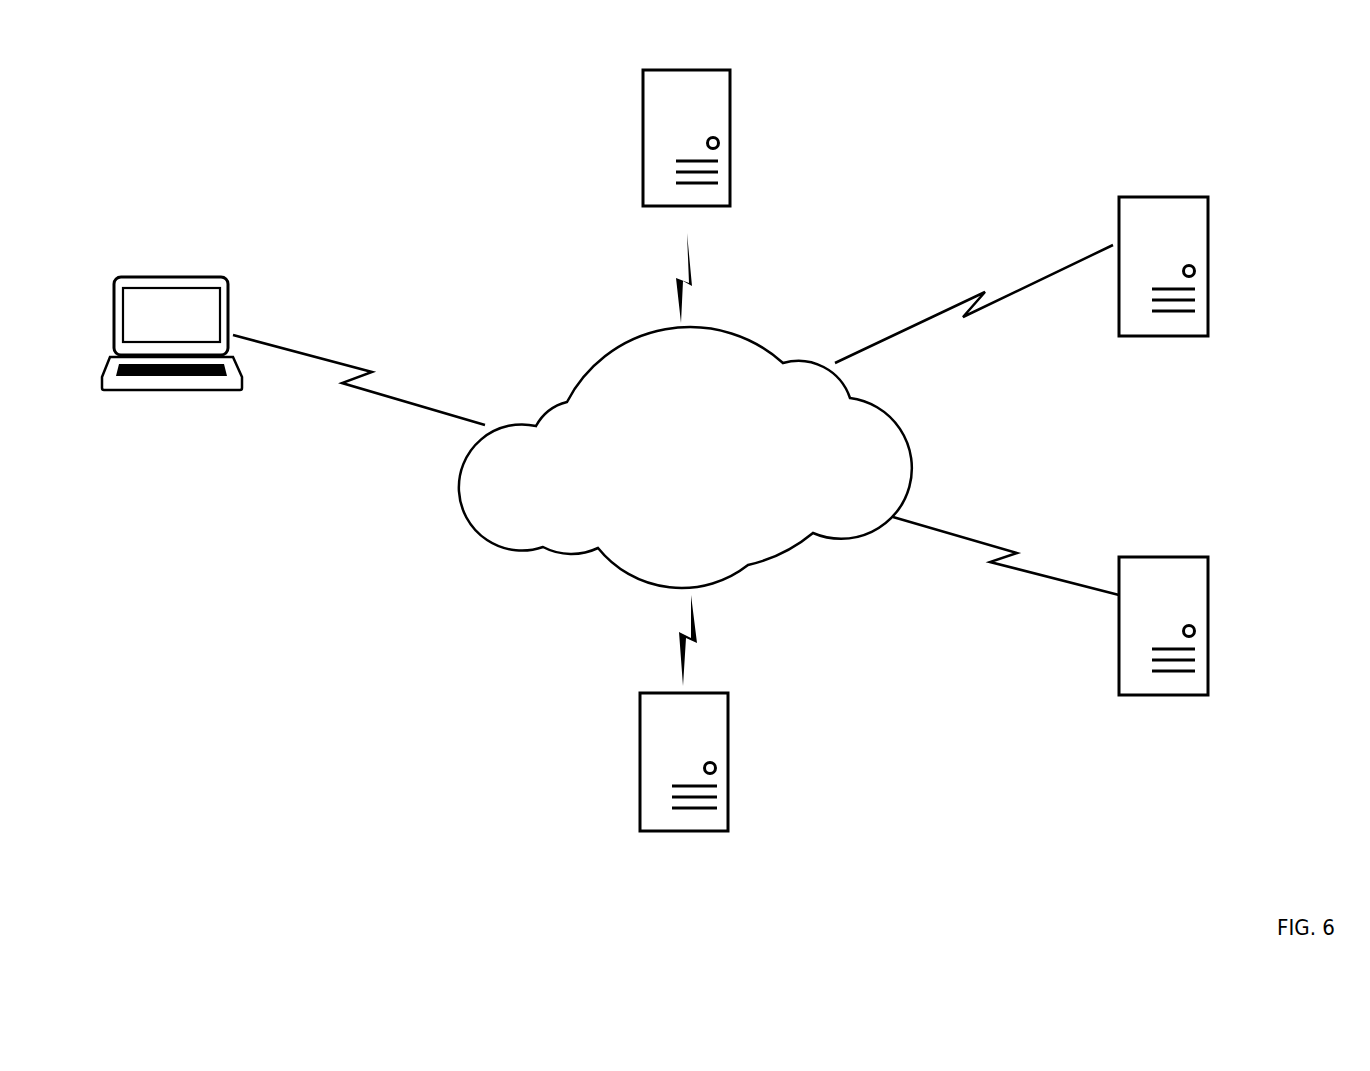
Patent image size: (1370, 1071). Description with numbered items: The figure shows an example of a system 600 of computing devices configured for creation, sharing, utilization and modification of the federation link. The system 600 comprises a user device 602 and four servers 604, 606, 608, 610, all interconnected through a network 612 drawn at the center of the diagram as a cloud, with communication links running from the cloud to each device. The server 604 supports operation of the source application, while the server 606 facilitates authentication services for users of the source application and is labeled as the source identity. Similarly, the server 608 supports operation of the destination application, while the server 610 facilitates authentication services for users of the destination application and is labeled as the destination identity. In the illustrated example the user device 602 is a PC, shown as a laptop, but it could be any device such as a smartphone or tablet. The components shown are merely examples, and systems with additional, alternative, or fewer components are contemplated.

The system 600 is at (992, 66).
The user device 602 is at (152, 275).
The server 604 is at (645, 106).
The server 606 is at (1121, 198).
The server 608 is at (642, 722).
The server 610 is at (1123, 558).
The network 612 is at (685, 457).